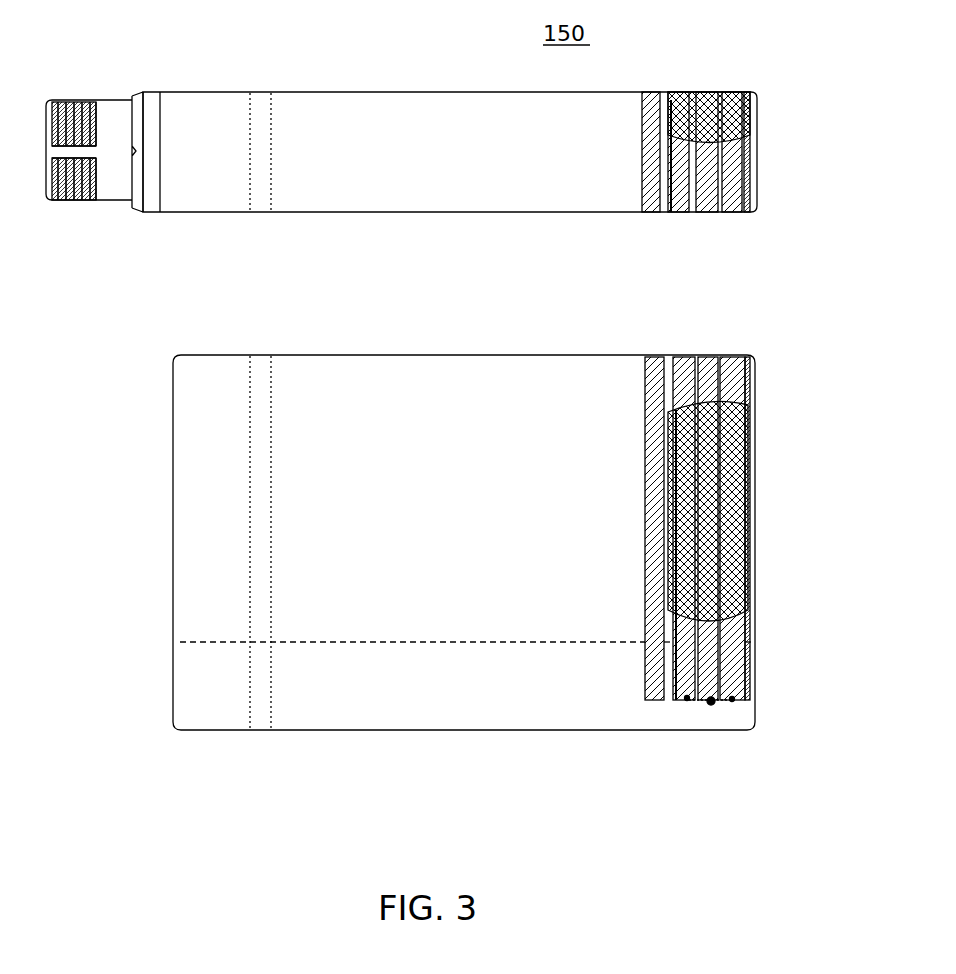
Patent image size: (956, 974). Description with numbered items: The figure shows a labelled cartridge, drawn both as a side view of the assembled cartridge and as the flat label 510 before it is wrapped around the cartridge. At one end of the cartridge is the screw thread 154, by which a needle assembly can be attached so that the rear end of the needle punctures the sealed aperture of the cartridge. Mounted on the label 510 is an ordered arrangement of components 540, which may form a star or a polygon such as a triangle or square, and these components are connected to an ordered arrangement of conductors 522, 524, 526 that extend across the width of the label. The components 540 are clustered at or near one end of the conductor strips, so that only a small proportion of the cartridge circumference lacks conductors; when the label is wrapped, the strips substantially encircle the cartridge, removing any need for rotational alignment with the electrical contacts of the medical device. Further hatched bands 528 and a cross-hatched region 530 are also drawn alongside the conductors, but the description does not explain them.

The screw thread 154 is at (94, 200).
The label 510 is at (344, 178).
The conductor 522 is at (680, 213).
The conductor 524 is at (700, 213).
The conductor 526 is at (728, 213).
The outer layer 528 is at (653, 355).
The bonding region 530 is at (735, 125).
The ordered arrangement of components 540 is at (711, 706).